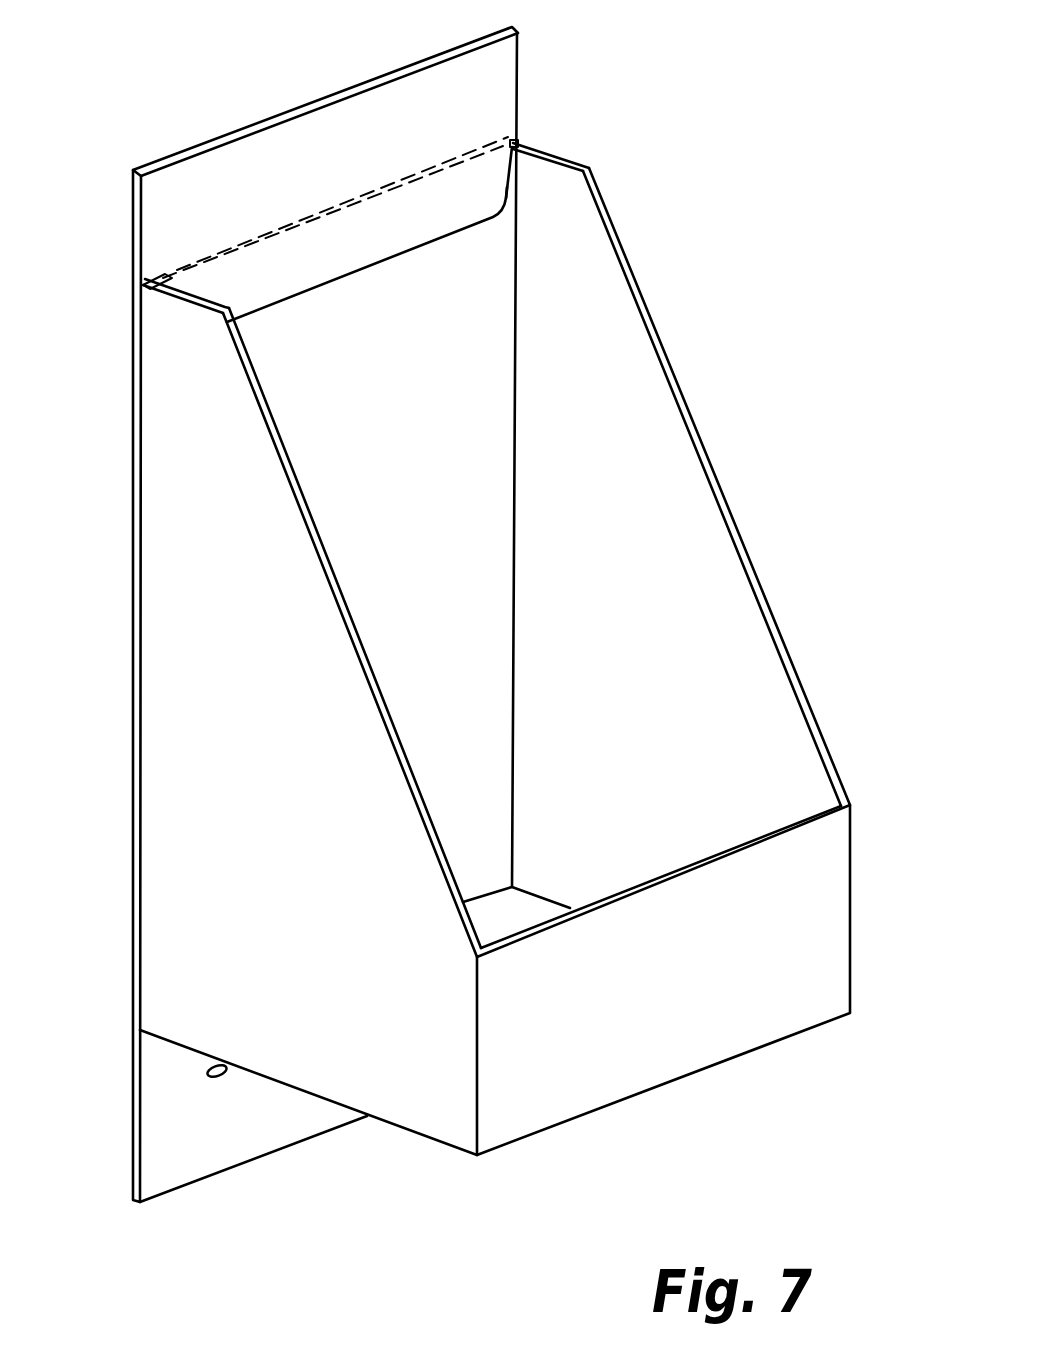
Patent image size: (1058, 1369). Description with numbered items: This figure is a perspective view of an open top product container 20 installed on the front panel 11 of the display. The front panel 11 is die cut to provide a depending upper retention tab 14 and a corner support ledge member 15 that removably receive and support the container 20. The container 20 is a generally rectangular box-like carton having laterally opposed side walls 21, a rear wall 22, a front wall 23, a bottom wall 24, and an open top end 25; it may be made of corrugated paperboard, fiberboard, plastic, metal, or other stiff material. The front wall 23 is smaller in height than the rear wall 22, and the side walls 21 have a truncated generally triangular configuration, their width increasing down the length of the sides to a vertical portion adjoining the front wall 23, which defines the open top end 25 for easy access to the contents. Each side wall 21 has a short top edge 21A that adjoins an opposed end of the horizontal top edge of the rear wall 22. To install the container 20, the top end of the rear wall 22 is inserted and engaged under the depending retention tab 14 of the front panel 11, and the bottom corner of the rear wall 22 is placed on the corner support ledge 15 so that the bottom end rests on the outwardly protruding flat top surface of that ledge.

The front panel 11 is at (280, 1126).
The upper retention tab 14 is at (333, 278).
The corner support ledge member 15 is at (228, 1073).
The product container 20 is at (674, 279).
The side wall 21 is at (305, 725).
The short top edge 21A is at (180, 303).
The rear wall 22 is at (425, 540).
The front wall 23 is at (645, 1010).
The bottom wall 24 is at (527, 907).
The open top end 25 is at (559, 195).